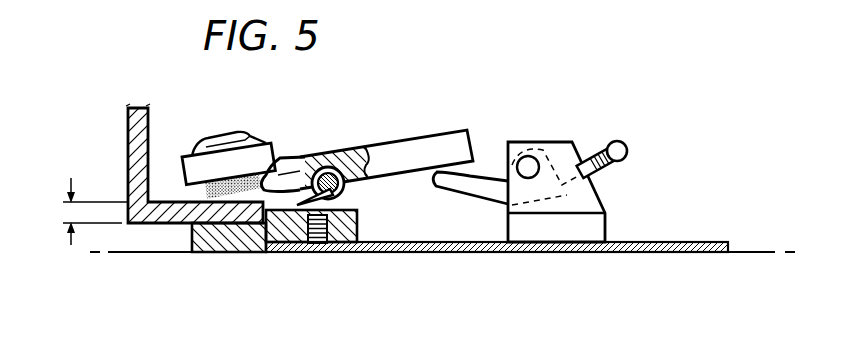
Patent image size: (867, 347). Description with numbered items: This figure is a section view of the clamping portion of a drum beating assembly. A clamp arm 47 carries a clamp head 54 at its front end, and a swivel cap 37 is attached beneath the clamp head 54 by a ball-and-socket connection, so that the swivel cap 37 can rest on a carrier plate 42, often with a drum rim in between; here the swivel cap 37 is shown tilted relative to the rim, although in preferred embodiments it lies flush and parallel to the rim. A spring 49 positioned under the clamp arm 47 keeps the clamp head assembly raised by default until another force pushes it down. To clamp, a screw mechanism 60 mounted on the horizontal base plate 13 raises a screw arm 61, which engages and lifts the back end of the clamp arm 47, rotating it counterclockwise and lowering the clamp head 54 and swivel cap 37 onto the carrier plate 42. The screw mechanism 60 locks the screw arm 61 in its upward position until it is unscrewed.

The horizontal base plate 13 is at (488, 253).
The swivel cap 37 is at (222, 198).
The carrier plate 42 is at (230, 255).
The clamp arm 47 is at (438, 132).
The spring 49 is at (300, 203).
The clamp head 54 is at (204, 166).
The screw mechanism 60 is at (553, 130).
The screw arm 61 is at (463, 186).